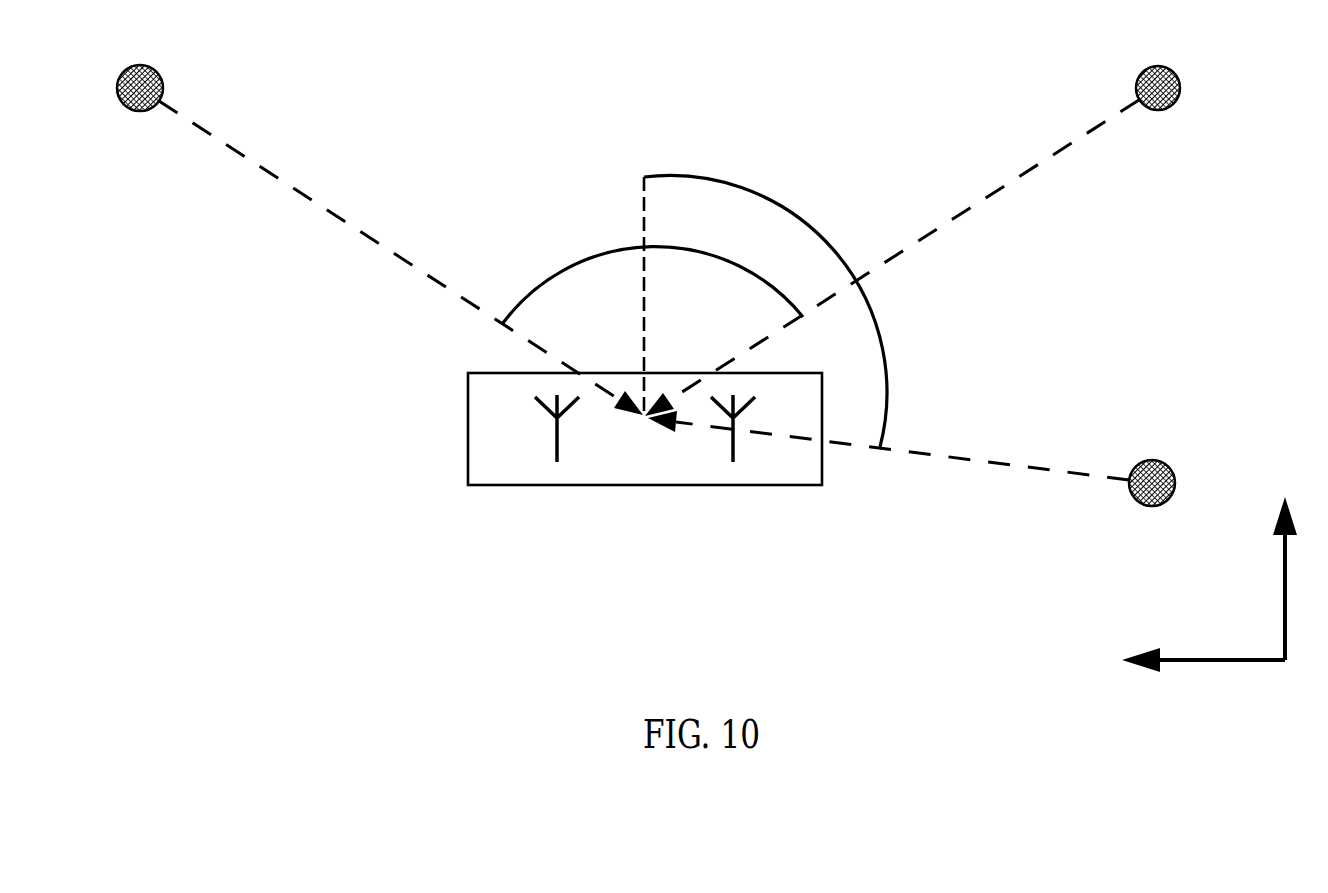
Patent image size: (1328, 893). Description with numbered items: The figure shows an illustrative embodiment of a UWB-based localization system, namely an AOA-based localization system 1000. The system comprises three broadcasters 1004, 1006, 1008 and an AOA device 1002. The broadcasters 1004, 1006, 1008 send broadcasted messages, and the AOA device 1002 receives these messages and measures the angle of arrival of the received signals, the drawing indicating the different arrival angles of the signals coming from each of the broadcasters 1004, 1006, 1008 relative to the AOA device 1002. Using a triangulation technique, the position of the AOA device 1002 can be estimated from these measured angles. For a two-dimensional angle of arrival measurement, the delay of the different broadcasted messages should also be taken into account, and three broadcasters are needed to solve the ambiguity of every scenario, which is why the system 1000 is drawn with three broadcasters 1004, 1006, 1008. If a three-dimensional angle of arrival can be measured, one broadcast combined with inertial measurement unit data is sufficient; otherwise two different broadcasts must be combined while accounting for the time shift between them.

The AOA-based localization system 1000 is at (256, 523).
The AOA device 1002 is at (533, 485).
The broadcaster 1004 is at (160, 77).
The broadcaster 1006 is at (1137, 80).
The broadcaster 1008 is at (1136, 466).